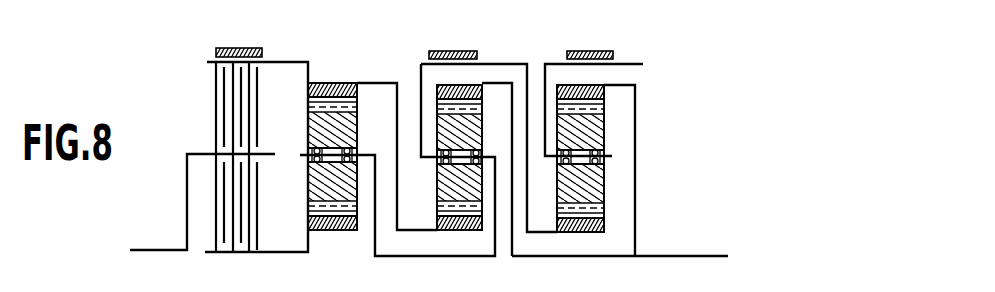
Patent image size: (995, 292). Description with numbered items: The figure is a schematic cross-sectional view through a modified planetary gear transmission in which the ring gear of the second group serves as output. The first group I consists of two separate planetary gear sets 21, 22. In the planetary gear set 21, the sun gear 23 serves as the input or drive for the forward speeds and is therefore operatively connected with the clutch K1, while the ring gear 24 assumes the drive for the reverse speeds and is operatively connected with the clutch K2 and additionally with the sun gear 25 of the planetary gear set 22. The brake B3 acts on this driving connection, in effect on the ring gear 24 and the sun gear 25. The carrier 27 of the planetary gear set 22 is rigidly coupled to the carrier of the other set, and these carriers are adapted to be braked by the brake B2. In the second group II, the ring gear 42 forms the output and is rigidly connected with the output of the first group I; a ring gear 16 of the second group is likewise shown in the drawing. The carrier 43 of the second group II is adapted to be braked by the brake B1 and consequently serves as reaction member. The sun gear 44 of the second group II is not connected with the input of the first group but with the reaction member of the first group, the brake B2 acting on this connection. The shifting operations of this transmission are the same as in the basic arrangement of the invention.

The brake B3 is at (240, 47).
The brake B2 is at (447, 47).
The brake B1 is at (601, 48).
The clutch K2 is at (240, 112).
The clutch K1 is at (240, 205).
The ring gear 24 is at (341, 82).
The sun gear 23 is at (328, 230).
The planetary gear set 21 is at (367, 145).
The first group I is at (393, 72).
The planetary gear set 22 is at (493, 108).
The ring gear 16 is at (435, 83).
The sun gear 25 is at (465, 232).
The carrier 27 is at (426, 163).
The ring gear 42 is at (568, 93).
The carrier 43 is at (548, 162).
The sun gear 44 is at (580, 233).
The second group II is at (614, 146).